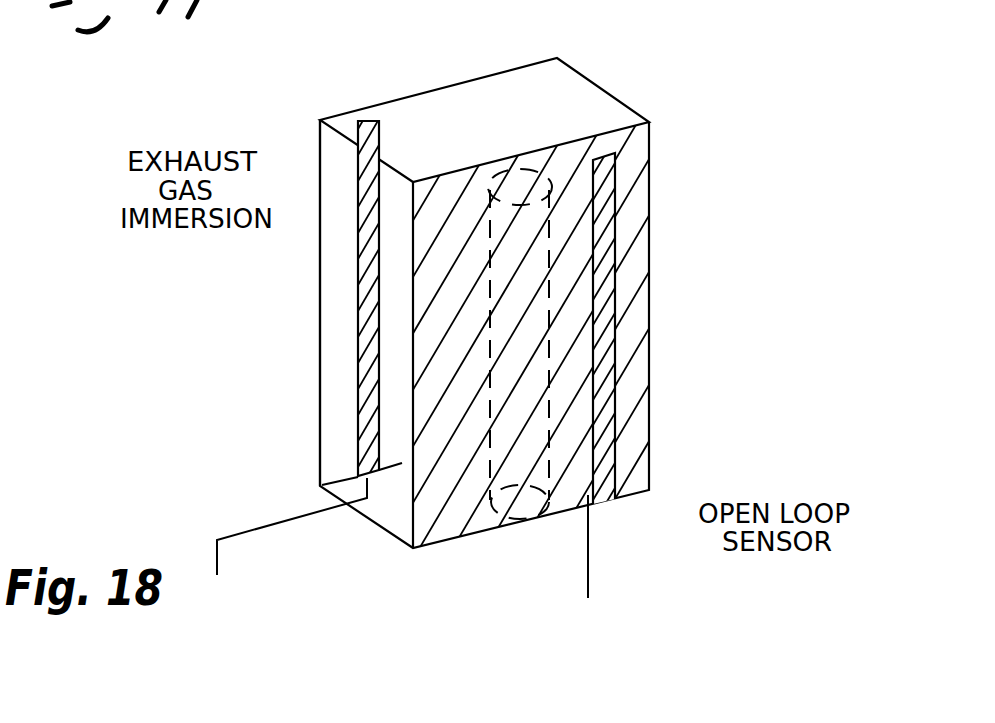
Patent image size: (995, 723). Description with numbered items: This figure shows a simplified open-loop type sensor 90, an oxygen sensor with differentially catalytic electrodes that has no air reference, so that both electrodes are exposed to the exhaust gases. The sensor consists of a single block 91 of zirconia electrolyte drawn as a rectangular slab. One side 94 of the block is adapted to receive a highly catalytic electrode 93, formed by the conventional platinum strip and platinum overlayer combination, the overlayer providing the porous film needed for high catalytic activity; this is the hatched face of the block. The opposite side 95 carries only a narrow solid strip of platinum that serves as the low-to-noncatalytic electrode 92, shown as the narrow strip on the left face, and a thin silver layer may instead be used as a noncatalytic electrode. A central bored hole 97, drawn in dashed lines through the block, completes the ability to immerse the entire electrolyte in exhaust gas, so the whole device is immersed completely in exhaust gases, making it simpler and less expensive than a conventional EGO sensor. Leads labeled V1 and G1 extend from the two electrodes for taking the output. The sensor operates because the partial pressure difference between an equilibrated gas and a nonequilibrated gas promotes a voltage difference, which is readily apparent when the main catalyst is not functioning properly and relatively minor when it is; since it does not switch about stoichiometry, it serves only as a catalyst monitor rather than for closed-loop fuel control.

The open-loop type sensor 90 is at (672, 52).
The block of ZrO2 electrolyte 91 is at (603, 200).
The low-to-noncatalytic electrode 92 is at (367, 200).
The highly catalytic electrode 93 is at (443, 475).
The one side of the electrolyte block 94 is at (650, 390).
The opposite side of the electrolyte block 95 is at (337, 430).
The central bored hole 97 is at (523, 168).
The voltage terminal V1 is at (288, 547).
The ground terminal G1 is at (593, 565).